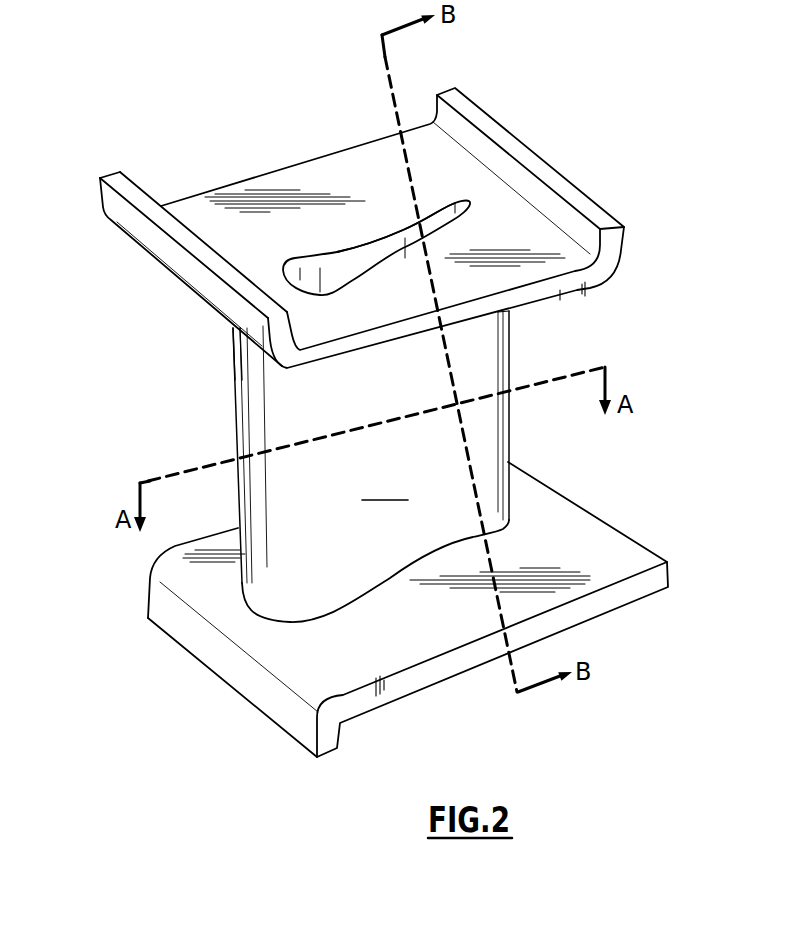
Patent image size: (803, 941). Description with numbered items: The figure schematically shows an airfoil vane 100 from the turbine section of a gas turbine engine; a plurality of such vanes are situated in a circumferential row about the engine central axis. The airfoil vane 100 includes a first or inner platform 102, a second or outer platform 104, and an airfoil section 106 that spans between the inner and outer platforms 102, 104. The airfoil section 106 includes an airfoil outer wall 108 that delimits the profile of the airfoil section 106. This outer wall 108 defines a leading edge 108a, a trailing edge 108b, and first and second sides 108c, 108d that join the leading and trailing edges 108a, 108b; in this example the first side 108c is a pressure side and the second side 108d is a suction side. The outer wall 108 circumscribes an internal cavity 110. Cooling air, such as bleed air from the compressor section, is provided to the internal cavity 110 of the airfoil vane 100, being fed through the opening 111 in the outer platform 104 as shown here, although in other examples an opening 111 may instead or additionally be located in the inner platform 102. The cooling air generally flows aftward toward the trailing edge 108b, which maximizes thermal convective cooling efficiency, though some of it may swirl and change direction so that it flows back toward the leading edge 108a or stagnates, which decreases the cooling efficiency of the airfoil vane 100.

The airfoil vane 100 is at (155, 124).
The inner platform 102 is at (612, 557).
The outer platform 104 is at (612, 250).
The airfoil section 106 is at (490, 357).
The airfoil outer wall 108 is at (373, 504).
The leading edge 108a is at (186, 388).
The trailing edge 108b is at (542, 440).
The first side 108c is at (292, 585).
The second side 108d is at (222, 337).
The internal cavity 110 is at (333, 272).
The opening 111 is at (383, 212).